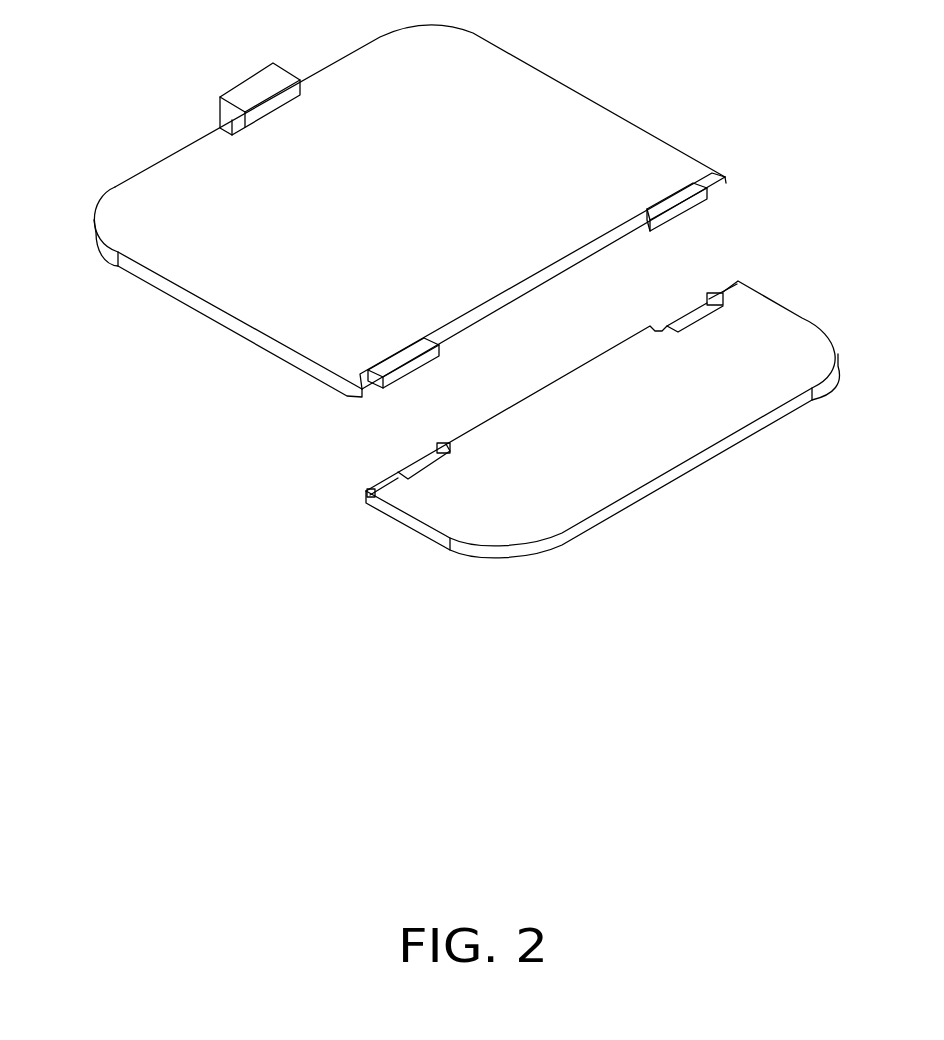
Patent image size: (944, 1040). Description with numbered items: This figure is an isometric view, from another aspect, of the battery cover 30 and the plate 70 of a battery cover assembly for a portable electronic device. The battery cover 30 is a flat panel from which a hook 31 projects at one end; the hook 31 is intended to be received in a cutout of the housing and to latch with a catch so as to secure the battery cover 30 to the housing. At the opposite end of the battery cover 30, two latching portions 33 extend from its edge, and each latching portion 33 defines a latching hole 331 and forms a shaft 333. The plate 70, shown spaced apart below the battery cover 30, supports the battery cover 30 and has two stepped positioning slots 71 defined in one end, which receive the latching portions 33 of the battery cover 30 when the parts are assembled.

The battery cover 30 is at (160, 128).
The hook 31 is at (227, 117).
The latching portion 33 is at (496, 260).
The latching hole 331 is at (663, 205).
The shaft 333 is at (688, 212).
The plate 70 is at (758, 318).
The stepped positioning slot 71 is at (420, 470).